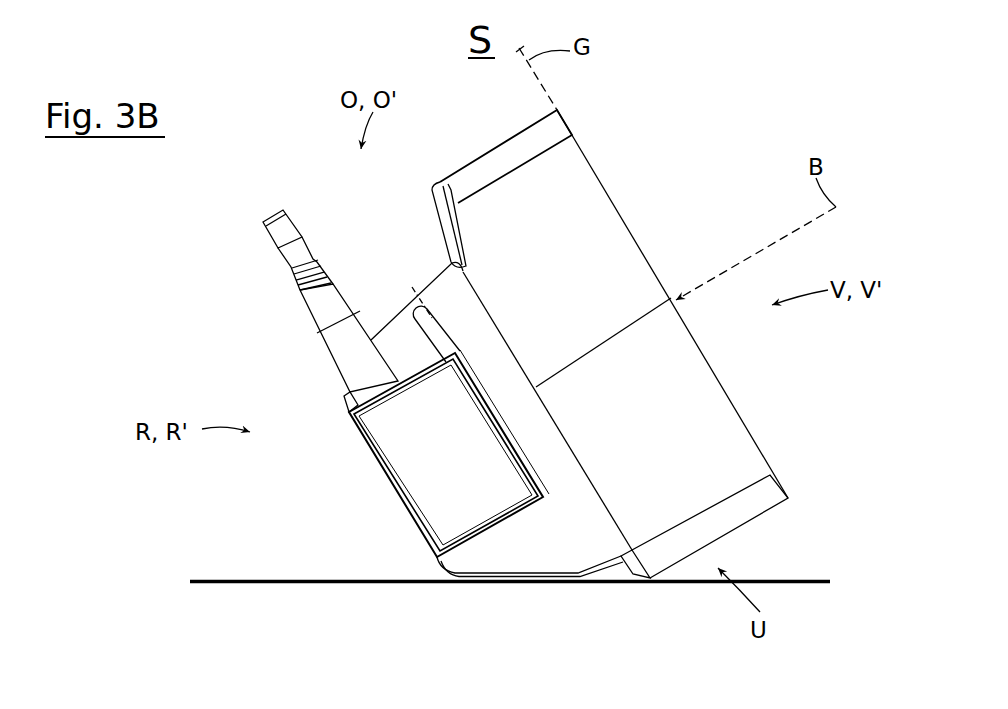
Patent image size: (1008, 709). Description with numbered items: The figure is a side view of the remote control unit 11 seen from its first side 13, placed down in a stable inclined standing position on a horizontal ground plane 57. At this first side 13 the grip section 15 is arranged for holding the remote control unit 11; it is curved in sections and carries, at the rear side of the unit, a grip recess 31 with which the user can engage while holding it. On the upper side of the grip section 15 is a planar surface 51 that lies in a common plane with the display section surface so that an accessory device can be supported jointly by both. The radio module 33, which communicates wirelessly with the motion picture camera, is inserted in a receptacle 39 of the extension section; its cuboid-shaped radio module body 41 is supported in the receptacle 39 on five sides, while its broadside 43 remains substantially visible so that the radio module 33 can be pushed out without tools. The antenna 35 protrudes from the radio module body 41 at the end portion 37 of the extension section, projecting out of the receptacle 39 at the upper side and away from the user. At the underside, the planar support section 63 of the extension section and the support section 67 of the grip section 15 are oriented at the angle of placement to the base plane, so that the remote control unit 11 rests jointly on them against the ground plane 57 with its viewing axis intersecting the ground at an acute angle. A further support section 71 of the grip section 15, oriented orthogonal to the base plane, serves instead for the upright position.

The remote control unit 11 is at (730, 98).
The first side 13 is at (808, 402).
The grip section 15 is at (623, 262).
The grip recess 31 is at (442, 210).
The radio module 33 is at (409, 482).
The antenna 35 is at (279, 226).
The end portion 37 is at (347, 400).
The receptacle 39 is at (404, 354).
The radio module body 41 is at (465, 470).
The broadside 43 is at (439, 517).
The surface 51 is at (503, 142).
The ground plane 57 is at (803, 577).
The support section 63 is at (526, 585).
The support section 67 is at (648, 582).
The further support section 71 is at (735, 530).